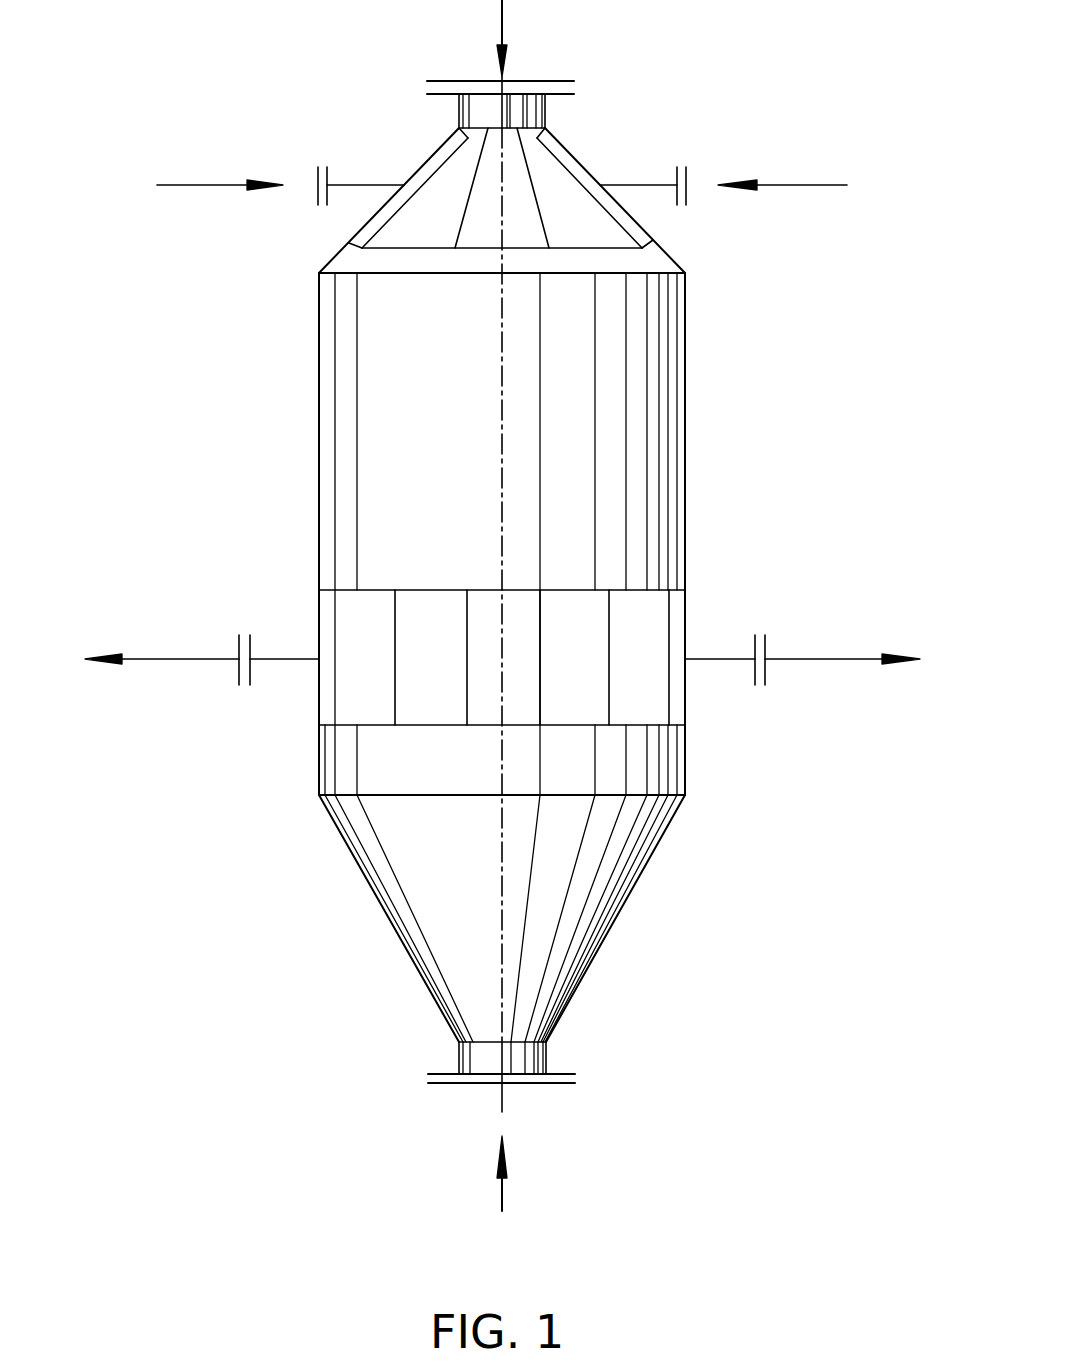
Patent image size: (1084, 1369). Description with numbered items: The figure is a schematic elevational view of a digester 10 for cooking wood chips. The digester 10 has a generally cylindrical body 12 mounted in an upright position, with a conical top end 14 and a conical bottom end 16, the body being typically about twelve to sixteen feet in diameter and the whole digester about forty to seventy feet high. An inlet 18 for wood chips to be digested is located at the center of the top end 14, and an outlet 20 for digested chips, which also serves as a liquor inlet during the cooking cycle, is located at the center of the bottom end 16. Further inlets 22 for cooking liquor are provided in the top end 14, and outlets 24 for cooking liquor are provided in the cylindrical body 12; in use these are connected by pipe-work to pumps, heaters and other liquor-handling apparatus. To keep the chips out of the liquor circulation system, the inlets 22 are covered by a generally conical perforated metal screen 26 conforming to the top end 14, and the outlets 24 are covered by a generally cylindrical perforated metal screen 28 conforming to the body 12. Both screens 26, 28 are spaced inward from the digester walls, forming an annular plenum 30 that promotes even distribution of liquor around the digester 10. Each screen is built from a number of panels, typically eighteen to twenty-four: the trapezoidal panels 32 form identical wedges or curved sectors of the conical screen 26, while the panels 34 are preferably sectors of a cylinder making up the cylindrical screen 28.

The digester 10 is at (345, 910).
The cylindrical body 12 is at (363, 445).
The conical top end 14 is at (617, 262).
The conical bottom end 16 is at (586, 880).
The inlet 18 is at (527, 81).
The outlet 20 is at (477, 1083).
The inlets 22 is at (317, 172).
The outlets 24 is at (237, 647).
The perforated metal screen 26 is at (417, 227).
The perforated metal screen 28 is at (365, 687).
The annular plenum 30 is at (433, 163).
The screen panels 32 is at (564, 218).
The screen panels 34 is at (583, 693).